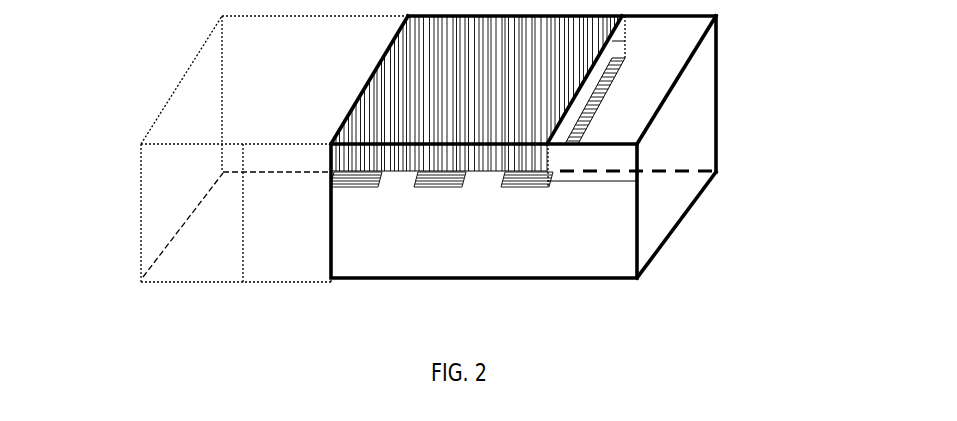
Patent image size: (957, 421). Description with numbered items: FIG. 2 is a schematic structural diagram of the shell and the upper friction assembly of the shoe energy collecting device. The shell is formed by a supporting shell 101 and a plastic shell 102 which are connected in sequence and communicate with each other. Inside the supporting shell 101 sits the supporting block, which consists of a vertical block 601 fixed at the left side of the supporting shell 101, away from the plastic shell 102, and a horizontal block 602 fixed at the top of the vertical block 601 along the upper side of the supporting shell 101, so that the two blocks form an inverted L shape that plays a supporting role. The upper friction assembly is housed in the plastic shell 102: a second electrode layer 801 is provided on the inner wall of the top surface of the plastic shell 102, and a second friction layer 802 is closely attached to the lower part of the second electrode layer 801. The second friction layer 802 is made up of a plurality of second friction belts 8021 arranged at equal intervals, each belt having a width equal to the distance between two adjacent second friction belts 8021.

The supporting shell 101 is at (268, 201).
The plastic shell 102 is at (605, 234).
The vertical block 601 is at (165, 272).
The horizontal block 602 is at (208, 83).
The second electrode layer 801 is at (615, 39).
The second friction layer 802 is at (830, 118).
The second friction belts 8021 is at (560, 179).